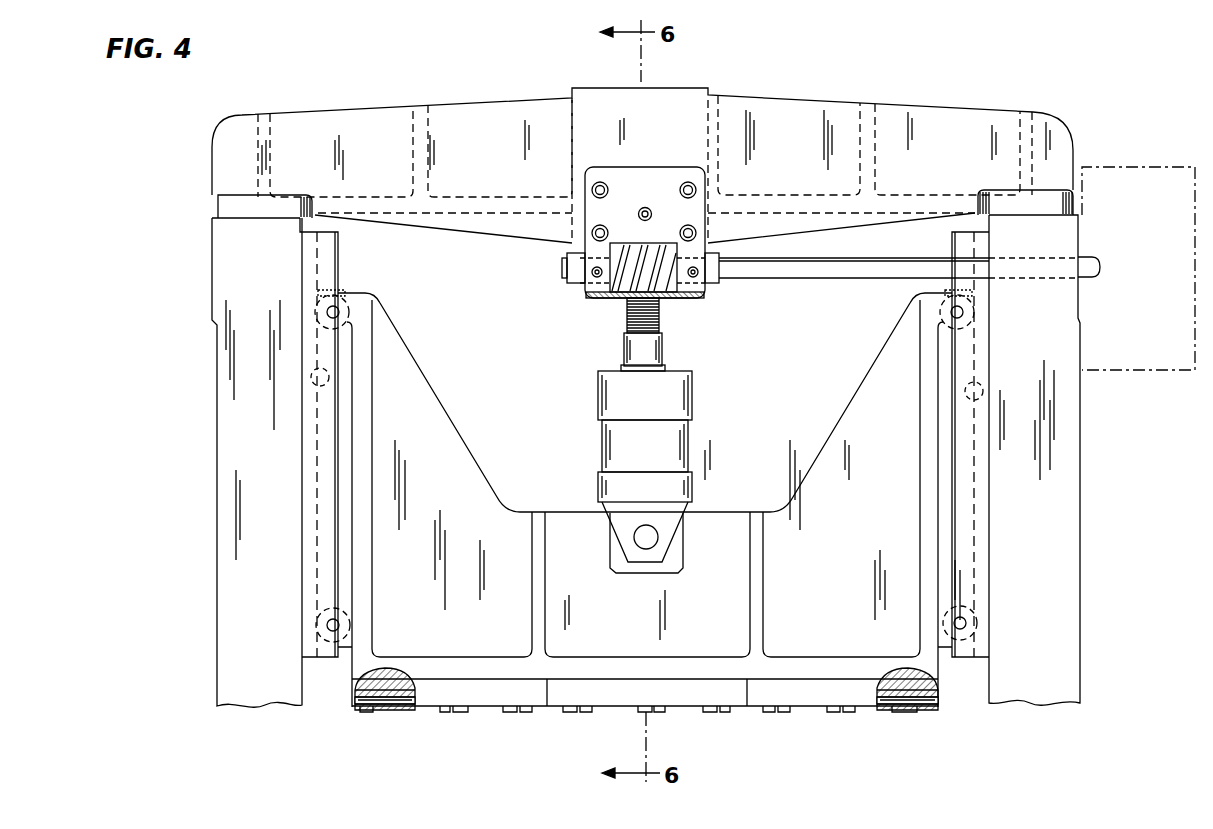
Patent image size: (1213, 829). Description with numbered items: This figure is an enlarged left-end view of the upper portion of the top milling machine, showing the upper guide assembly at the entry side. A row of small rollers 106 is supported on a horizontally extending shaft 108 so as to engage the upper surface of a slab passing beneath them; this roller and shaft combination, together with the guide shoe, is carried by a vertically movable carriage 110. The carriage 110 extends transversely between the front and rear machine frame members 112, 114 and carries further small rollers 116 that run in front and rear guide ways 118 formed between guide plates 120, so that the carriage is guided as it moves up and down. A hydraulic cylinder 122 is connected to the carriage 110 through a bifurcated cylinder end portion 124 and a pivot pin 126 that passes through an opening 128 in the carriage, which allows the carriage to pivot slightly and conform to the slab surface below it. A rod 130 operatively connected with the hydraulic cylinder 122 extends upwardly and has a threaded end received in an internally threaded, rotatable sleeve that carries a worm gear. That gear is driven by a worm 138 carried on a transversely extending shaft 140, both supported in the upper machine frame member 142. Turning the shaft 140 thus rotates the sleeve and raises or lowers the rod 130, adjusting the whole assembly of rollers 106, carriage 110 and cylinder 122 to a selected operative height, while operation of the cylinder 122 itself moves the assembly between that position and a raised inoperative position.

The small rollers 106 is at (468, 713).
The horizontally extending shaft 108 is at (942, 700).
The carriage 110 is at (860, 392).
The front machine frame member 112 is at (1080, 458).
The rear machine frame member 114 is at (216, 494).
The small rollers 116 is at (318, 314).
The guide ways 118 is at (314, 379).
The guide plates 120 is at (338, 420).
The hydraulic cylinder 122 is at (692, 390).
The bifurcated cylinder end portion 124 is at (670, 522).
The pivot pin 126 is at (642, 555).
The opening 128 is at (655, 546).
The rod 130 is at (667, 346).
The worm 138 is at (622, 274).
The transversely extending shaft 140 is at (843, 277).
The upper machine frame member 142 is at (697, 208).